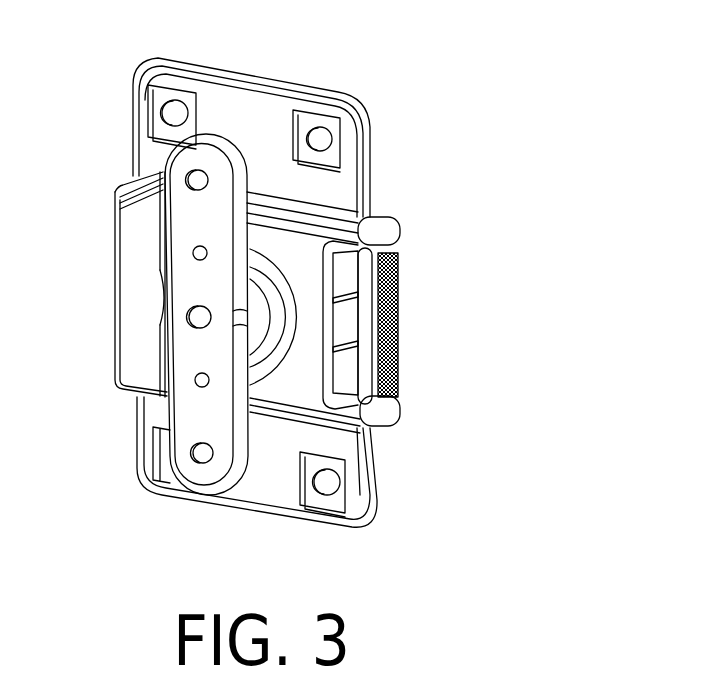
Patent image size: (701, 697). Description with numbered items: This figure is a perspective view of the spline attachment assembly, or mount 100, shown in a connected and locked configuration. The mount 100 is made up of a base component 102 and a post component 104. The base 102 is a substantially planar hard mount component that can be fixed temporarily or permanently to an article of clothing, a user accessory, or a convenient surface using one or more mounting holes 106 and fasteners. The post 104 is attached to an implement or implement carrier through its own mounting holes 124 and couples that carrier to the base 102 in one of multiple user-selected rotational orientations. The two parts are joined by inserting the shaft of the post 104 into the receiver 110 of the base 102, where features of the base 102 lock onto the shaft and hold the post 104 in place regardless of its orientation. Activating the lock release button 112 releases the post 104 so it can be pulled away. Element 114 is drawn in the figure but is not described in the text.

The spline attachment assembly 100 is at (527, 36).
The base component 102 is at (370, 118).
The post component 104 is at (163, 172).
The mounting holes 106 is at (177, 112).
The receiver 110 is at (152, 275).
The lock release button 112 is at (397, 308).
The hook slot 114 is at (349, 388).
The mounting holes 124 is at (194, 450).